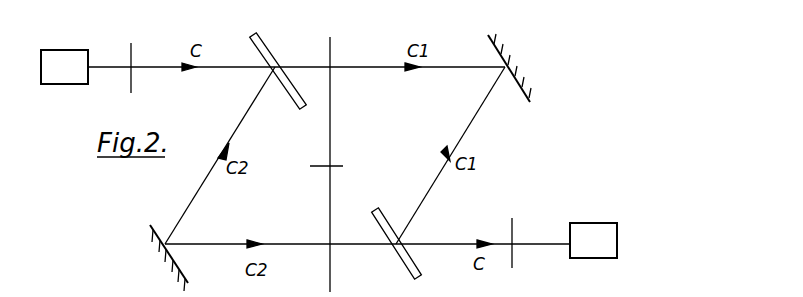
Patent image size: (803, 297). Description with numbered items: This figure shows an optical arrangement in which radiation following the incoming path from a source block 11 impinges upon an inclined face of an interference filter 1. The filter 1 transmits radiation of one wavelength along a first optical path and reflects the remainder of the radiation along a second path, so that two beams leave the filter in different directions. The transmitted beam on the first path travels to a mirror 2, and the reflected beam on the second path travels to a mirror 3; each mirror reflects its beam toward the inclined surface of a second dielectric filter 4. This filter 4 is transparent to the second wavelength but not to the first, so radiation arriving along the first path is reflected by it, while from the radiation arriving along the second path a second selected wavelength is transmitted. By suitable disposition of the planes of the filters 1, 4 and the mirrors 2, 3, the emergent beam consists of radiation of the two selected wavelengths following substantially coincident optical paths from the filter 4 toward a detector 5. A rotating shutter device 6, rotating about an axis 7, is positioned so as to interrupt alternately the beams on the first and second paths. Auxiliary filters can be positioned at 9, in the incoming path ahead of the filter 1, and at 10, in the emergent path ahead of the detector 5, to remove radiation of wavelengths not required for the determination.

The interference filter 1 is at (266, 49).
The mirror 2 is at (511, 66).
The mirror 3 is at (158, 255).
The second dielectric filter 4 is at (398, 265).
The detector 5 is at (578, 233).
The rotating shutter device 6 is at (330, 63).
The axis 7 is at (333, 166).
The auxiliary filter position 9 is at (131, 54).
The auxiliary filter position 10 is at (512, 232).
The light source 11 is at (80, 66).